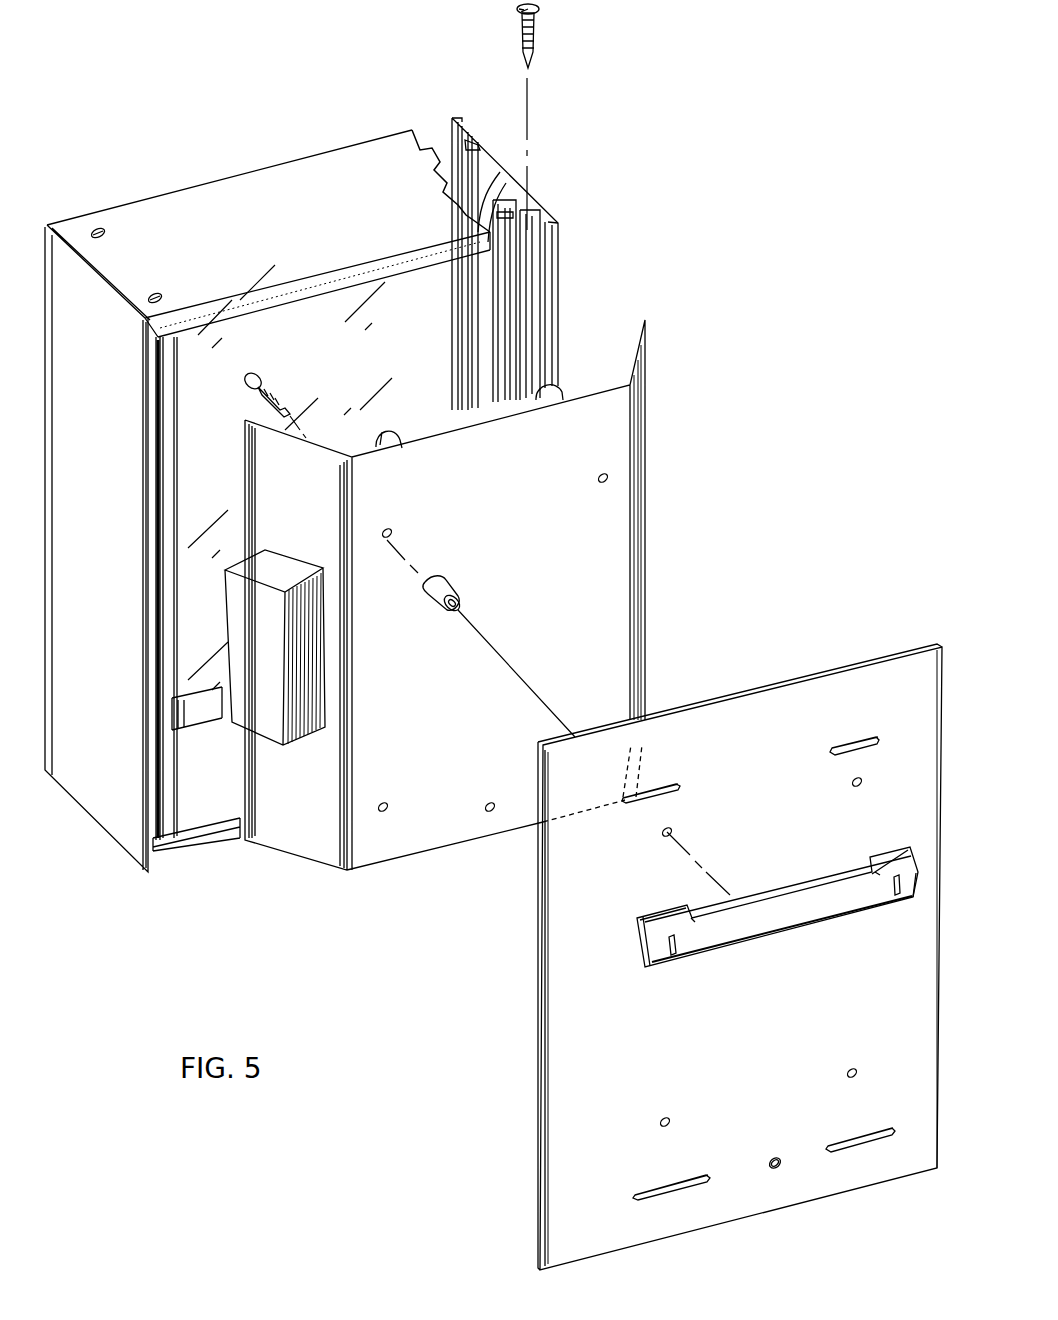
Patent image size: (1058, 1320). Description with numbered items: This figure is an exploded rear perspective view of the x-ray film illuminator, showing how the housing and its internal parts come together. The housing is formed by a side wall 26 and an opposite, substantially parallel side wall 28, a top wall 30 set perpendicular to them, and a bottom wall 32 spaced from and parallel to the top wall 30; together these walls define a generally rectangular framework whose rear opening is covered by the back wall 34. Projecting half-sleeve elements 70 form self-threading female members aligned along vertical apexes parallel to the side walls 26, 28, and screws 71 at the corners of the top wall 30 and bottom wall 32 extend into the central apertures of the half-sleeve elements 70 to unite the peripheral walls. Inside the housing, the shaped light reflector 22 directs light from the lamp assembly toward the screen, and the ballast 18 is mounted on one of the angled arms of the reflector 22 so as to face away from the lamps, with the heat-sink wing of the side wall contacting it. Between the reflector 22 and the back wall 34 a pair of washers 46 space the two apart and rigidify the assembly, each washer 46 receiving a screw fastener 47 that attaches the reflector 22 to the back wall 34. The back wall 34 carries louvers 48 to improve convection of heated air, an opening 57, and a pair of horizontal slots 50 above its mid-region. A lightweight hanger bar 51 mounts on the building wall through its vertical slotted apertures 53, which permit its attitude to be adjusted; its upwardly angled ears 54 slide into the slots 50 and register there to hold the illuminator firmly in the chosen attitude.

The ballast 18 is at (270, 735).
The light reflector 22 is at (605, 441).
The side wall 26 is at (545, 272).
The side wall 28 is at (118, 798).
The top wall 30 is at (98, 226).
The bottom wall 32 is at (205, 836).
The back wall 34 is at (560, 1080).
The washers 46 is at (448, 586).
The screw fastener 47 is at (272, 392).
The louvers 48 is at (652, 1190).
The horizontal slots 50 is at (658, 782).
The hanger bar 51 is at (820, 914).
The vertical slotted apertures 53 is at (676, 952).
The ears 54 is at (642, 918).
The hole 57 is at (770, 1160).
The half-sleeve elements 70 is at (538, 228).
The screws 71 is at (538, 44).